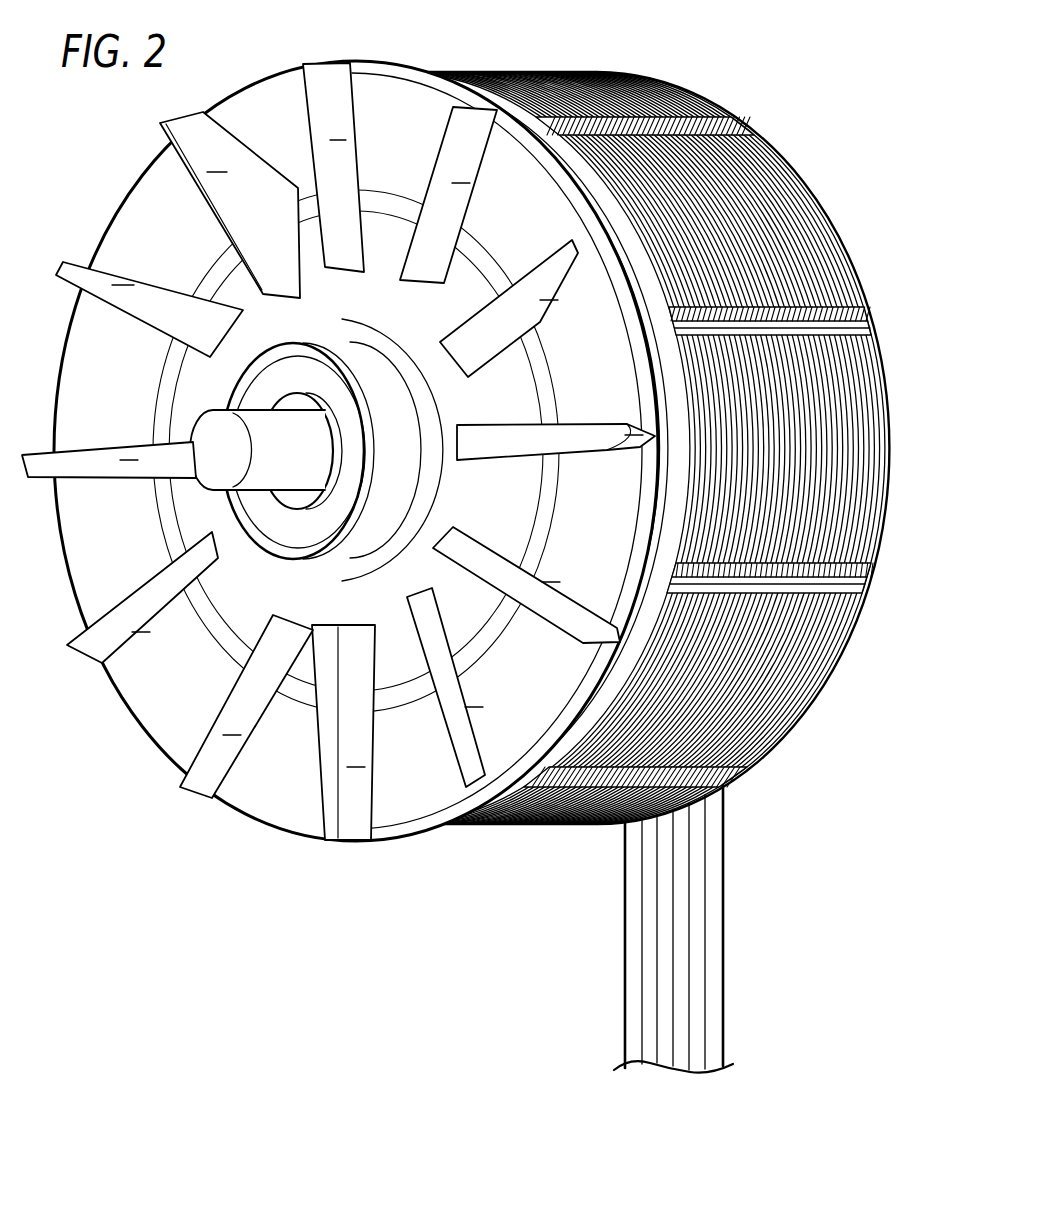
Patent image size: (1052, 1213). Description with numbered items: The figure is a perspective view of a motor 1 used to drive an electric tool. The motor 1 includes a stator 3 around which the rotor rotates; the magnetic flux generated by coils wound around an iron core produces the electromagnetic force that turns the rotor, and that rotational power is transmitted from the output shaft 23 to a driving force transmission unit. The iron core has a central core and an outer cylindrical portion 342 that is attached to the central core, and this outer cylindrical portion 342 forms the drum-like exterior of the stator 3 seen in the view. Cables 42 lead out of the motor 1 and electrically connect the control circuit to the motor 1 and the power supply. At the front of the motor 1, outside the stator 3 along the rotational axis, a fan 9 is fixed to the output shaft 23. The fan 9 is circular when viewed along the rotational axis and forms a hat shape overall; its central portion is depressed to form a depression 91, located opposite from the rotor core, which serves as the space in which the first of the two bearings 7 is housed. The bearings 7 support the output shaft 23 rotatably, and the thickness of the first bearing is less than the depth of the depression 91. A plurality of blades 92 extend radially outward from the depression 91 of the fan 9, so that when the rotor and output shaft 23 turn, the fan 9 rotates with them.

The motor 1 is at (780, 86).
The stator 3 is at (780, 702).
The outer cylindrical portion 342 is at (762, 188).
The bearings 7 is at (263, 523).
The fan 9 is at (402, 823).
The depression 91 is at (347, 567).
The blades 92 is at (68, 262).
The output shaft 23 is at (210, 474).
The cables 42 is at (718, 944).